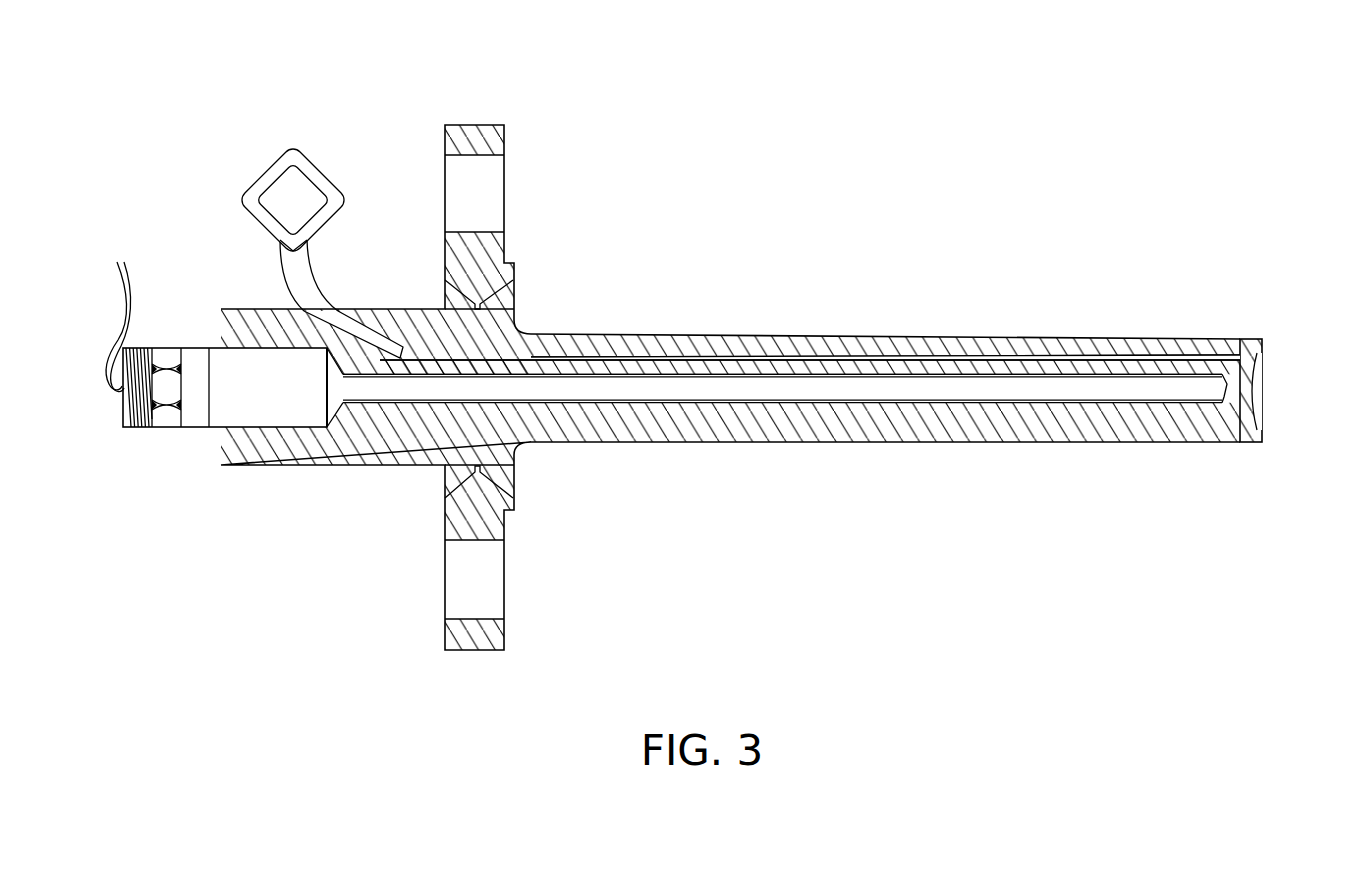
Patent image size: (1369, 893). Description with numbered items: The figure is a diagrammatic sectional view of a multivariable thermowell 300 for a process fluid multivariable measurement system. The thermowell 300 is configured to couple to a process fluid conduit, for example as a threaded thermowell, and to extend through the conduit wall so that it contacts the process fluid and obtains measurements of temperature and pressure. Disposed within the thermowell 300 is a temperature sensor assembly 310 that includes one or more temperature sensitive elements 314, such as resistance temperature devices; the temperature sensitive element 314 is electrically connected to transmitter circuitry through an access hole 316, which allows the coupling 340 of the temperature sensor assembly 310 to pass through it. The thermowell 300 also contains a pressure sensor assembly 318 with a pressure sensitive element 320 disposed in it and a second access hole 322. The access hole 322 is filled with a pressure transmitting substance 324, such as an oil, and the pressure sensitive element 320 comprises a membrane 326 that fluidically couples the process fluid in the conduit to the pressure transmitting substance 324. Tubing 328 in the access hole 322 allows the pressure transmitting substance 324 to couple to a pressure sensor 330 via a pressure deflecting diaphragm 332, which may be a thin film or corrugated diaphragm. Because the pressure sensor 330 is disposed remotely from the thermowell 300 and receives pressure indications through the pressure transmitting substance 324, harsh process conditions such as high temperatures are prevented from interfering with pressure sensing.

The multivariable thermowell 300 is at (736, 337).
The temperature sensor assembly 310 is at (1156, 422).
The temperature sensitive element 314 is at (1225, 400).
The access hole 316 is at (848, 402).
The pressure sensor assembly 318 is at (1174, 337).
The pressure sensitive element 320 is at (1263, 388).
The access hole 322 is at (820, 355).
The pressure transmitting substance 324 is at (942, 364).
The membrane 326 is at (1263, 394).
The tubing 328 is at (325, 297).
The pressure sensor 330 is at (266, 175).
The pressure deflecting diaphragm 332 is at (280, 243).
The coupling 340 is at (1005, 402).